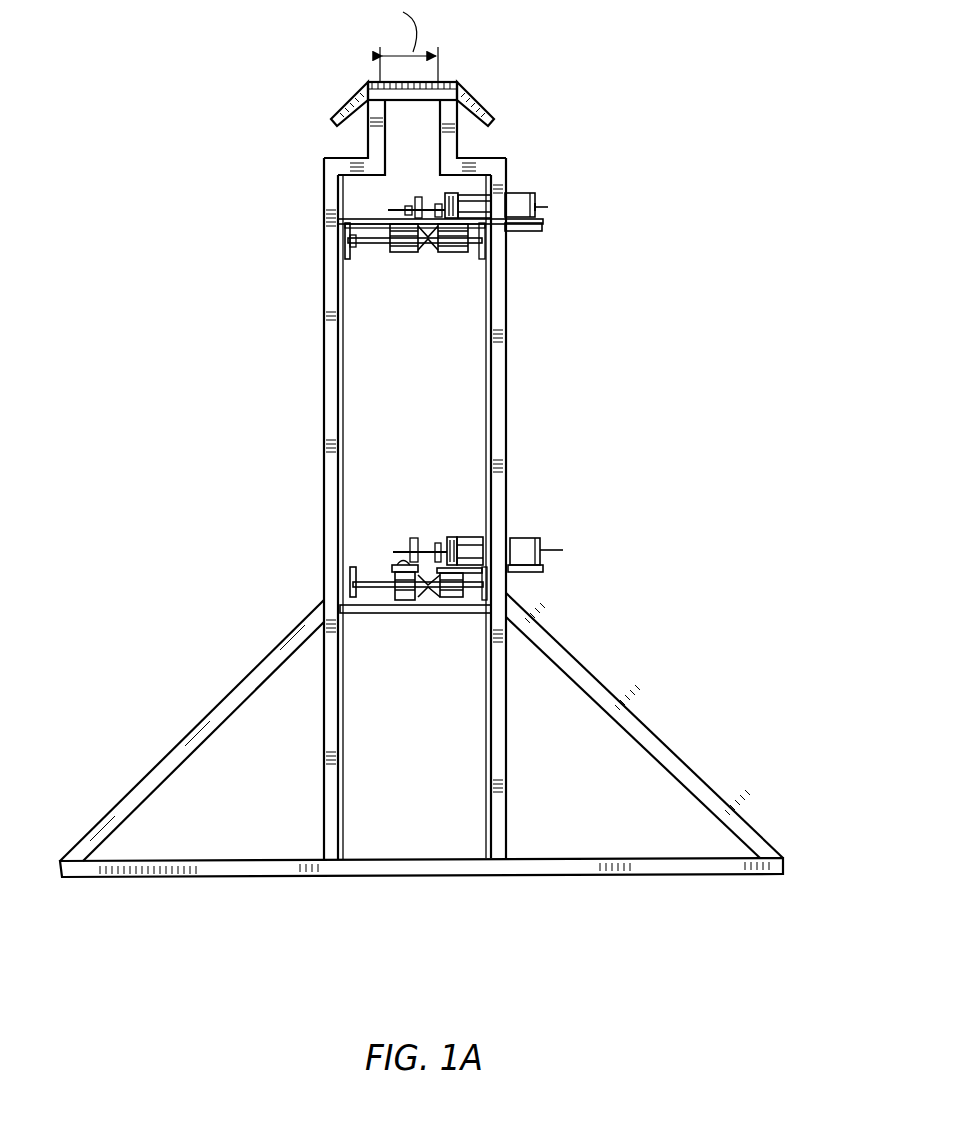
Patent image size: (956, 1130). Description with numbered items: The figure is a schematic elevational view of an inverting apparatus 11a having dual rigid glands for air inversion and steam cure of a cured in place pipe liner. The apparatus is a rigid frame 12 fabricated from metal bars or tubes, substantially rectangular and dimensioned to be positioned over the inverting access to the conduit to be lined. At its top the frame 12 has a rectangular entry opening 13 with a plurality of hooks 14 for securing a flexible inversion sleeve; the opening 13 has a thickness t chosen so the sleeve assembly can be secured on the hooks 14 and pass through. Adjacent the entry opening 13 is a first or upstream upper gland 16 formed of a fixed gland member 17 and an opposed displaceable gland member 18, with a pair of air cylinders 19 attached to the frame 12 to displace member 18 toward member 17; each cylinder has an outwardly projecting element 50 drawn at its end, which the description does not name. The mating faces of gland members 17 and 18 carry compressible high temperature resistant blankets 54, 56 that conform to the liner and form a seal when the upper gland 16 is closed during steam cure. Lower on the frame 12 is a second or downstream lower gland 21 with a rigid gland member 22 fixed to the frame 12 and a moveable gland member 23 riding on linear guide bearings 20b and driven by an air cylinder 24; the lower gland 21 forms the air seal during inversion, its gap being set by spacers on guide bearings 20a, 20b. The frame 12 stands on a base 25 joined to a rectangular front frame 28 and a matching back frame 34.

The inverting apparatus 11a is at (267, 397).
The frame 12 is at (445, 770).
The entry opening 13 is at (416, 76).
The hooks 14 is at (485, 104).
The upper gland 16 is at (378, 204).
The fixed gland member 17 is at (455, 253).
The displaceable gland member 18 is at (401, 253).
The air cylinders 19 is at (518, 192).
The guide bearings 20a is at (350, 277).
The linear guide bearings 20b is at (378, 590).
The lower gland 21 is at (378, 548).
The rigid gland member 22 is at (448, 600).
The moveable gland member 23 is at (398, 600).
The air cylinder 24 is at (522, 537).
The base 25 is at (591, 891).
The front frame 28 is at (322, 467).
The back frame 34 is at (511, 443).
The motor shaft 50 is at (543, 212).
The compressible high temperature resistant blanket 54 is at (436, 253).
The compressible high temperature resistant blanket 56 is at (419, 253).